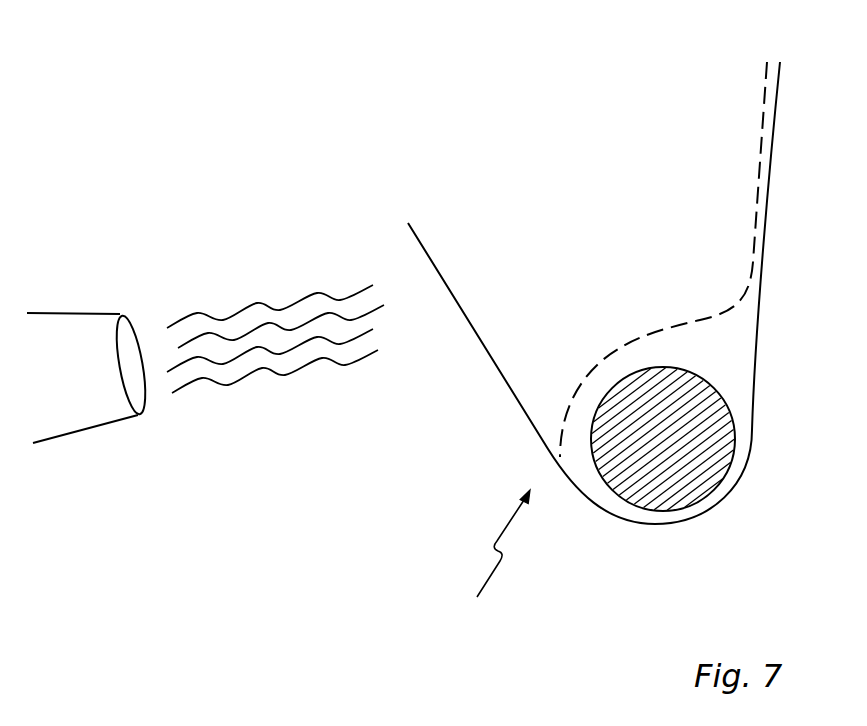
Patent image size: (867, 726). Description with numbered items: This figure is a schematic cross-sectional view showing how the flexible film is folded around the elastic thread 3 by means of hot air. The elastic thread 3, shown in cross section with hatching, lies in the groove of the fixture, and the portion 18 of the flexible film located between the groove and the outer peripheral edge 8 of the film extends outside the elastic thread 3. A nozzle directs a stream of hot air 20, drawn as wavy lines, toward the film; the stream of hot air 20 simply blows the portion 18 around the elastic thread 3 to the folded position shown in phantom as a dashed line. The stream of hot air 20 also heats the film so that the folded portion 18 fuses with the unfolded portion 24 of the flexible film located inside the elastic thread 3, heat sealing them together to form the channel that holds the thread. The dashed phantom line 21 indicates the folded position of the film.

The elastic thread 3 is at (642, 493).
The outer peripheral edge 8 is at (495, 565).
The portion of the flexible film 18 is at (510, 398).
The stream of hot air 20 is at (200, 412).
The web / sheet 21 is at (762, 128).
The unfolded portion of the flexible film 24 is at (770, 173).